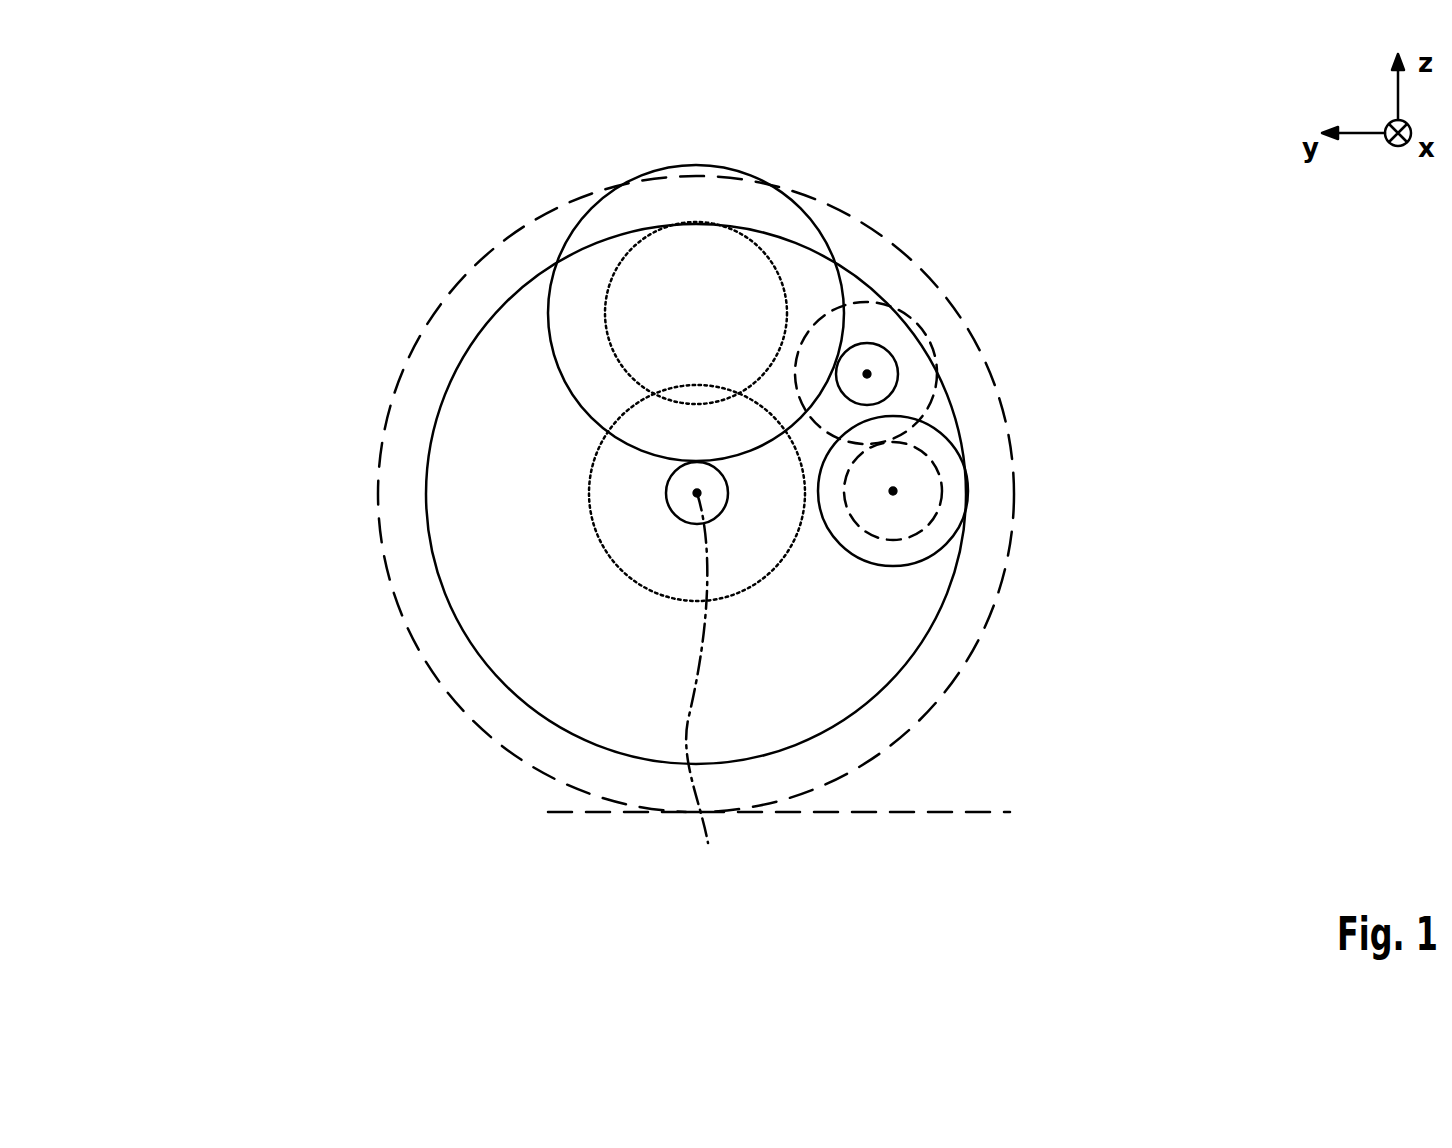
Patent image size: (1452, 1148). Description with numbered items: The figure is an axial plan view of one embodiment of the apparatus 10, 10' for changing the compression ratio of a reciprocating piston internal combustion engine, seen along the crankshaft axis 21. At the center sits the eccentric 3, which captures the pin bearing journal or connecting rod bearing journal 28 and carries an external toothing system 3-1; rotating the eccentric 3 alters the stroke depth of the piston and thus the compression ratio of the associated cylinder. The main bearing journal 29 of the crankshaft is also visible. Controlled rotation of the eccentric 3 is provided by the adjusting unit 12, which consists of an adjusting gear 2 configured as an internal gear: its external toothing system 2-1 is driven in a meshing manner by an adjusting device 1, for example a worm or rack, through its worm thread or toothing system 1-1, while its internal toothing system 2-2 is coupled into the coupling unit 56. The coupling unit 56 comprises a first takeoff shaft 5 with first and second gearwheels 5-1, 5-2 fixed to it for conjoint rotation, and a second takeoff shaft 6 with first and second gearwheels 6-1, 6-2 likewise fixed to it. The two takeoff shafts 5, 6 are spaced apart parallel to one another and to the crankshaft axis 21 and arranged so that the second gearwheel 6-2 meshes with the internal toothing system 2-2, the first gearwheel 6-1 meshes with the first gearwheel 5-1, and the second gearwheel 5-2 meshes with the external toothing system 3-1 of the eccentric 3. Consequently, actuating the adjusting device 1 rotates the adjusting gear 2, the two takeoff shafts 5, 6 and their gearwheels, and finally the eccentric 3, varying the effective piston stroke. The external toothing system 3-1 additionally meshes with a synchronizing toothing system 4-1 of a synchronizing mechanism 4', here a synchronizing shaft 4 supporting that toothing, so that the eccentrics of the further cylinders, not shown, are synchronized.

The apparatus for changing a compression ratio 10 is at (196, 89).
The machine tool / power tool device (variant) 10' is at (192, 67).
The adjusting unit 12 is at (300, 618).
The adjusting device 1 is at (925, 825).
The worm thread or toothing system 1-1 is at (883, 798).
The adjusting gear 2 is at (447, 655).
The external toothing system 2-1 is at (466, 718).
The internal toothing system 2-2 is at (474, 601).
The eccentric 3 is at (572, 316).
The external toothing system 3-1 is at (550, 291).
The pin bearing journal 28 is at (617, 254).
The main bearing journal 29 is at (588, 534).
The synchronizing shaft 4 is at (522, 493).
The synchronizing toothing system 4-1 is at (668, 480).
The synchronizing mechanism 4' is at (259, 447).
The crankshaft axis 21 is at (703, 687).
The first takeoff shaft 5 is at (882, 368).
The first gearwheel 5-1 is at (917, 323).
The second gearwheel 5-2 is at (898, 387).
The second takeoff shaft 6 is at (915, 496).
The first gearwheel 6-1 is at (913, 541).
The second gearwheel 6-2 is at (947, 420).
The coupling unit 56 is at (1115, 272).